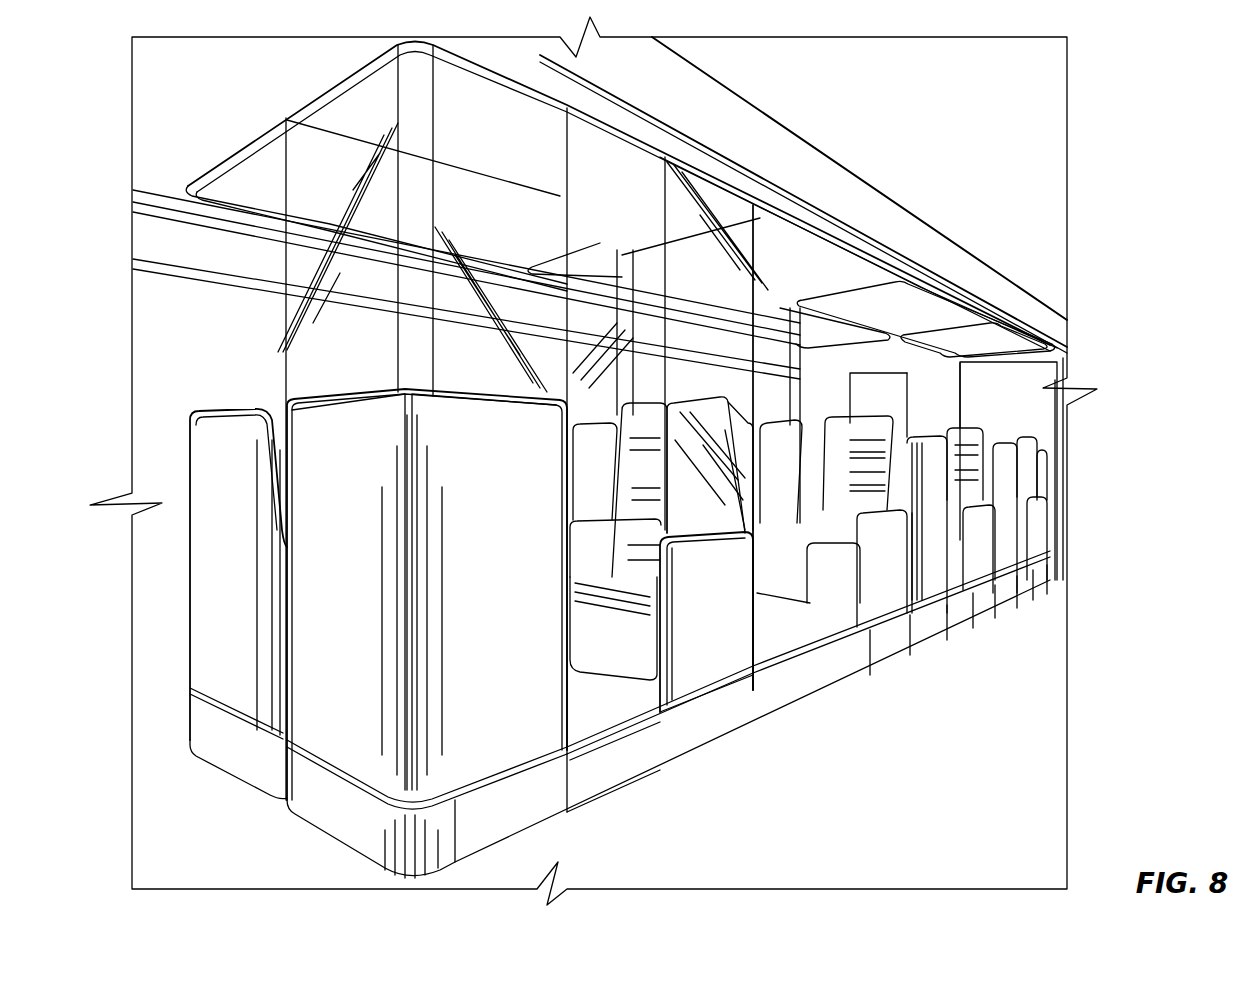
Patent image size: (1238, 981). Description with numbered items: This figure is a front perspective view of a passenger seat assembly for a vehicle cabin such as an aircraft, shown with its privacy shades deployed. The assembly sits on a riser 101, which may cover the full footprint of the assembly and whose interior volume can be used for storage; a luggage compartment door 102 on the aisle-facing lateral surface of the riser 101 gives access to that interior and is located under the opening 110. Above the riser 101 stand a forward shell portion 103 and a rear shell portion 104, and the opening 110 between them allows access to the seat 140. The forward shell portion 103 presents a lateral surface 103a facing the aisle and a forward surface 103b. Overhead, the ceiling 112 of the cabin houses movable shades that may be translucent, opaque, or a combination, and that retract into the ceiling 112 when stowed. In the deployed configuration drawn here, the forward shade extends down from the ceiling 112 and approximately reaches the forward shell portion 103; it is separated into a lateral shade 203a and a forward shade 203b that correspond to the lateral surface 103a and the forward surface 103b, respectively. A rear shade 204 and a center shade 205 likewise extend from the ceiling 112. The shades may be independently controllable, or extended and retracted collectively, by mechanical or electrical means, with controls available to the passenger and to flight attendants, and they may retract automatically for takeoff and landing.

The riser 101 is at (320, 810).
The luggage compartment door 102 is at (593, 777).
The forward shell portion 103 is at (427, 663).
The lateral surface 103a is at (482, 476).
The forward surface 103b is at (313, 476).
The rear shell portion 104 is at (690, 611).
The opening 110 is at (617, 695).
The ceiling 112 is at (600, 158).
The seat 140 is at (618, 541).
The lateral shade 203a is at (472, 247).
The forward shade 203b is at (327, 352).
The rear shade 204 is at (677, 311).
The center shade 205 is at (582, 271).